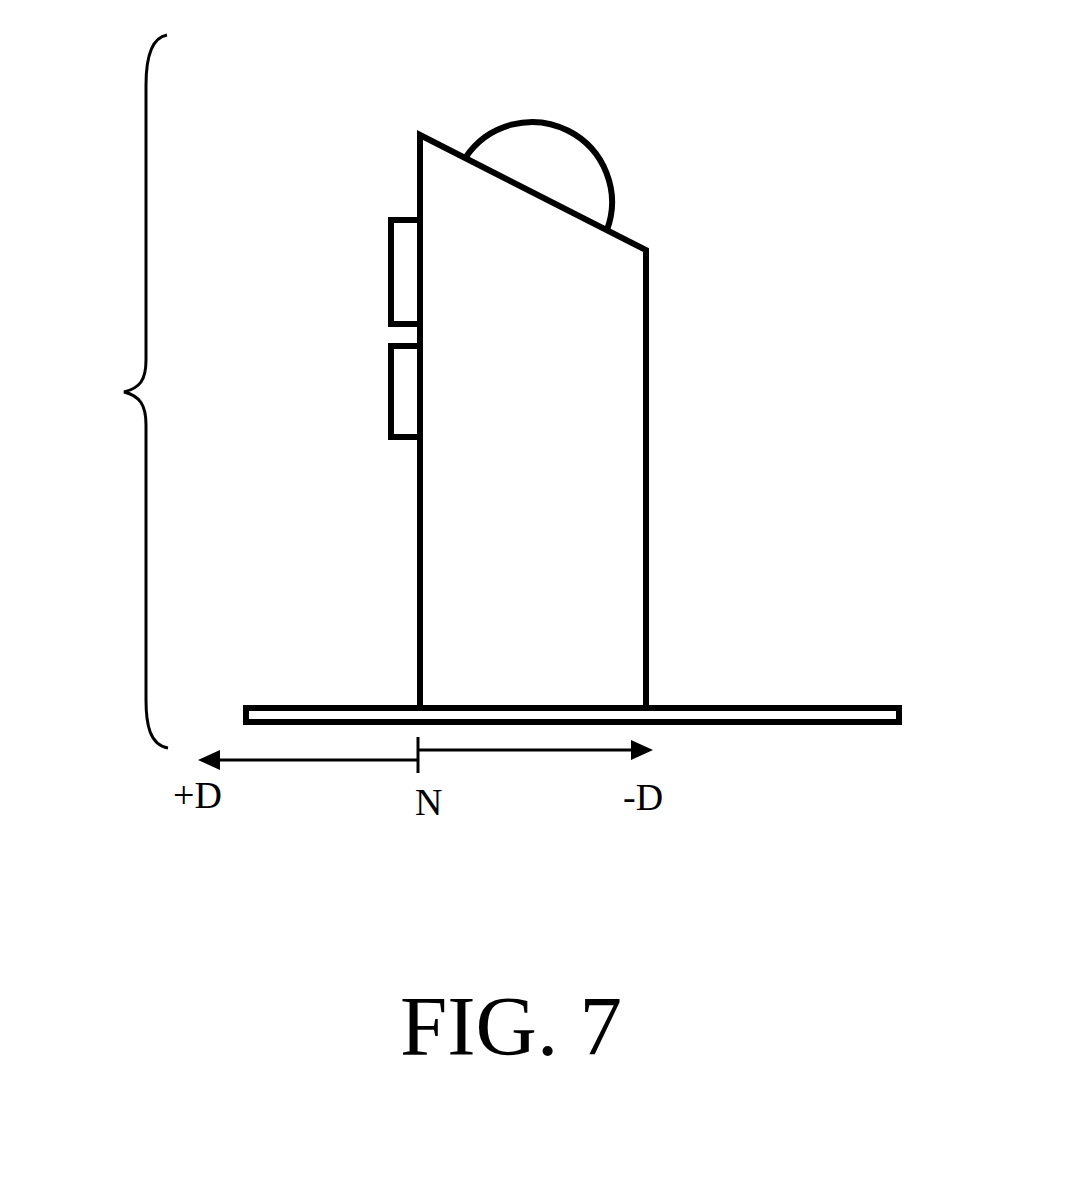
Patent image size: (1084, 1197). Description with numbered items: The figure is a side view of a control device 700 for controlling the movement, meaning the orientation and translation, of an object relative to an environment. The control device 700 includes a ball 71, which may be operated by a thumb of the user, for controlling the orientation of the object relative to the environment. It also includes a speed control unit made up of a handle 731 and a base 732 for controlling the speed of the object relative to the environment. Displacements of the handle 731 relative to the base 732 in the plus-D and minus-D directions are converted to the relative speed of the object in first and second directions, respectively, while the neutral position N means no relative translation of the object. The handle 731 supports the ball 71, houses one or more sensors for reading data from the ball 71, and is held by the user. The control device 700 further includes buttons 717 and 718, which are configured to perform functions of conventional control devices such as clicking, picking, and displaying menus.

The control device 700 is at (108, 391).
The ball 71 is at (528, 142).
The button 717 is at (400, 243).
The button 718 is at (405, 372).
The handle 731 is at (622, 637).
The base 732 is at (863, 715).